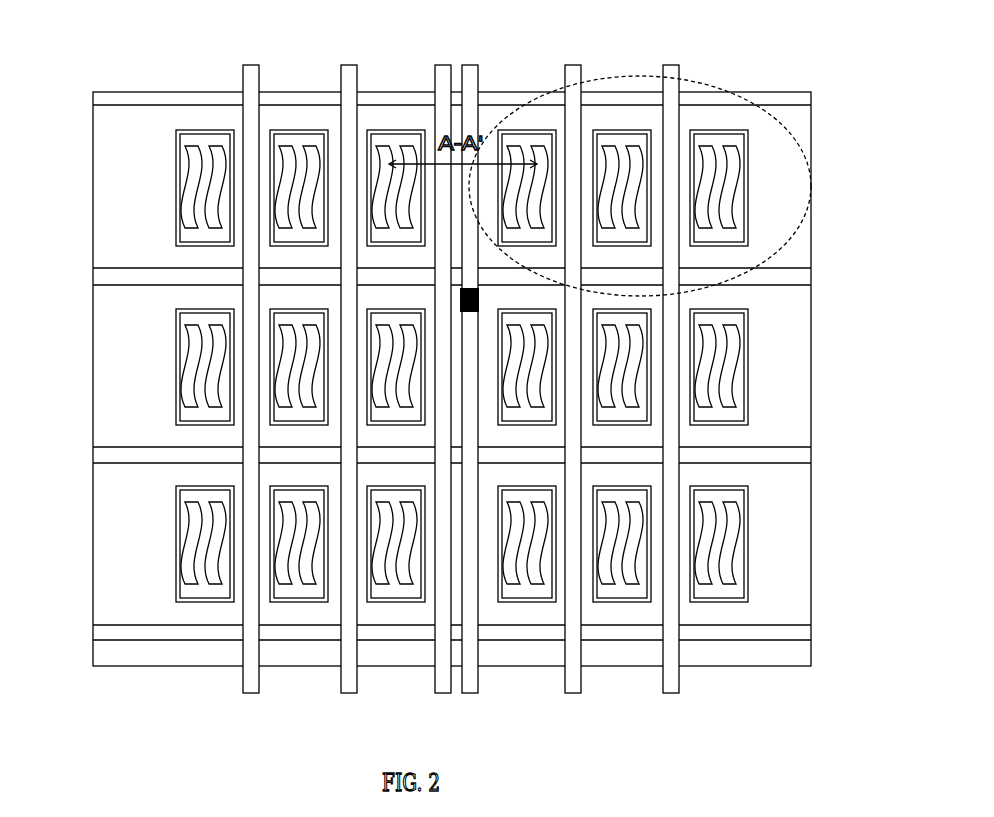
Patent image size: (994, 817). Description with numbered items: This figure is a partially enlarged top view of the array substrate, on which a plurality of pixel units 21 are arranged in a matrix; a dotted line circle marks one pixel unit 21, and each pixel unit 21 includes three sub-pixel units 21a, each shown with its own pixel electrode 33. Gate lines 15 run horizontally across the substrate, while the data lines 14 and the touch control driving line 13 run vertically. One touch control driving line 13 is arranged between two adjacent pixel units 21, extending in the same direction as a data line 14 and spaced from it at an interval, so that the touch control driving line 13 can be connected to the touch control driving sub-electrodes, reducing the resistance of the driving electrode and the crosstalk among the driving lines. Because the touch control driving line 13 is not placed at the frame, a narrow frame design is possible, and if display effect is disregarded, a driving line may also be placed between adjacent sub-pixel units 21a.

The touch control driving line 13 is at (470, 63).
The data line 14 is at (443, 63).
The gate line 15 is at (93, 97).
The pixel unit 21 is at (699, 82).
The sub-pixel unit 21a is at (786, 170).
The pixel electrode 33 is at (748, 372).